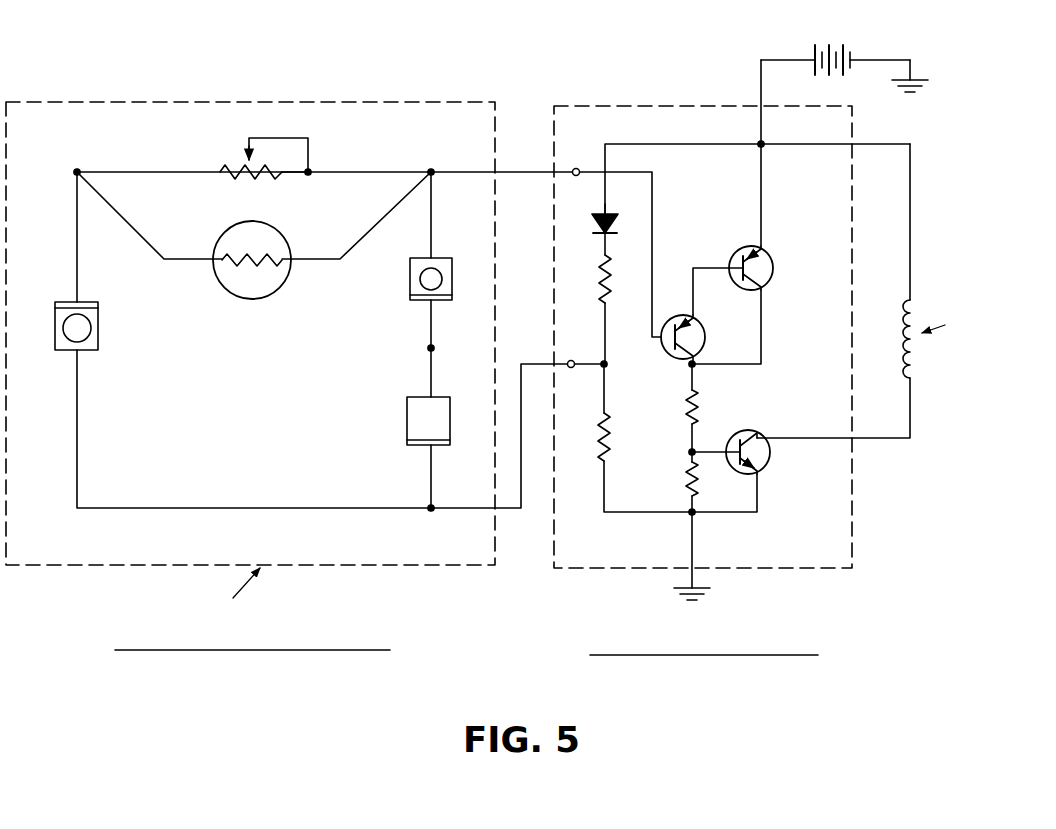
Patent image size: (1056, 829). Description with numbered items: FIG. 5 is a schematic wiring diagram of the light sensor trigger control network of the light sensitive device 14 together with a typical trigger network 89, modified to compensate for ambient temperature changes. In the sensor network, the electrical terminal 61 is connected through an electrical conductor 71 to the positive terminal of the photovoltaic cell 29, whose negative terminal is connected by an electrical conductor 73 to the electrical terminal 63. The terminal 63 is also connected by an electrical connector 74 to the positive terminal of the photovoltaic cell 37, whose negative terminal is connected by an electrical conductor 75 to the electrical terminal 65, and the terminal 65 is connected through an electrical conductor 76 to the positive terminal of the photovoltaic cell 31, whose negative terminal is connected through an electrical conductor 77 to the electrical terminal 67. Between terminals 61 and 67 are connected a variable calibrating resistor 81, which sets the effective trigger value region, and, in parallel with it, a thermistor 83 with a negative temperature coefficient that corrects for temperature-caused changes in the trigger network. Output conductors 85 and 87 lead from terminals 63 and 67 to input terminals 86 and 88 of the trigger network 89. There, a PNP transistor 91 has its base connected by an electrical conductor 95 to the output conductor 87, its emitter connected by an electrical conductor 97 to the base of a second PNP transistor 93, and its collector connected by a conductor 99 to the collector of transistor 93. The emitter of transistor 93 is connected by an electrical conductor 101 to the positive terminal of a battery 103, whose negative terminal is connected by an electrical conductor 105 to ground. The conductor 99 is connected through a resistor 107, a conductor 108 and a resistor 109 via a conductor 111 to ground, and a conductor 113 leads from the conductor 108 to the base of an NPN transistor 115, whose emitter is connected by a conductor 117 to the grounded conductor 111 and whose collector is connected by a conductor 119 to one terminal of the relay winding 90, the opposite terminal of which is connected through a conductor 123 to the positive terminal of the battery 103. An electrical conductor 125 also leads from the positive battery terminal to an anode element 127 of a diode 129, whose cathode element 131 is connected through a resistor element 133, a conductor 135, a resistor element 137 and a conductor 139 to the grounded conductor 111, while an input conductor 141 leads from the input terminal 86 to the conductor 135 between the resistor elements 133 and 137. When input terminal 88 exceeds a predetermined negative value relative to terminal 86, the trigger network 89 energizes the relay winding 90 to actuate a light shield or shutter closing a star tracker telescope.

The light sensitive device 14 is at (182, 100).
The photovoltaic cell 29 is at (80, 350).
The photovoltaic cell 31 is at (406, 280).
The photovoltaic cell 37 is at (404, 418).
The electrical terminal 61 is at (77, 167).
The electrical terminal 63 is at (430, 511).
The electrical terminal 65 is at (434, 348).
The electrical terminal 67 is at (432, 167).
The electrical conductor 71 is at (79, 255).
The electrical conductor 73 is at (252, 510).
The electrical connector 74 is at (427, 478).
The electrical conductor 75 is at (427, 370).
The electrical conductor 76 is at (427, 320).
The electrical conductor 77 is at (433, 220).
The variable calibrating resistor 81 is at (228, 166).
The thermistor 83 is at (224, 294).
The output conductor 85 is at (518, 512).
The input terminal 86 is at (572, 360).
The output conductor 87 is at (525, 177).
The input terminal 88 is at (577, 167).
The trigger network 89 is at (642, 102).
The relay winding 90 is at (916, 367).
The PNP transistor 91 is at (705, 325).
The PNP transistor 93 is at (772, 284).
The electrical conductor 95 is at (655, 196).
The electrical conductor 97 is at (694, 266).
The conductor 99 is at (763, 340).
The electrical conductor 101 is at (764, 182).
The battery 103 is at (838, 42).
The electrical conductor 105 is at (893, 57).
The resistor 107 is at (688, 405).
The conductor 108 is at (688, 453).
The resistor 109 is at (688, 485).
The conductor 111 is at (690, 545).
The conductor 113 is at (700, 450).
The NPN transistor 115 is at (757, 432).
The conductor 117 is at (722, 514).
The conductor 119 is at (874, 440).
The conductor 123 is at (912, 195).
The electrical conductor 125 is at (657, 146).
The anode element 127 is at (598, 220).
The diode 129 is at (622, 231).
The cathode element 131 is at (601, 235).
The resistor element 133 is at (600, 283).
The conductor 135 is at (633, 330).
The resistor element 137 is at (609, 438).
The conductor 139 is at (601, 495).
The input conductor 141 is at (588, 372).